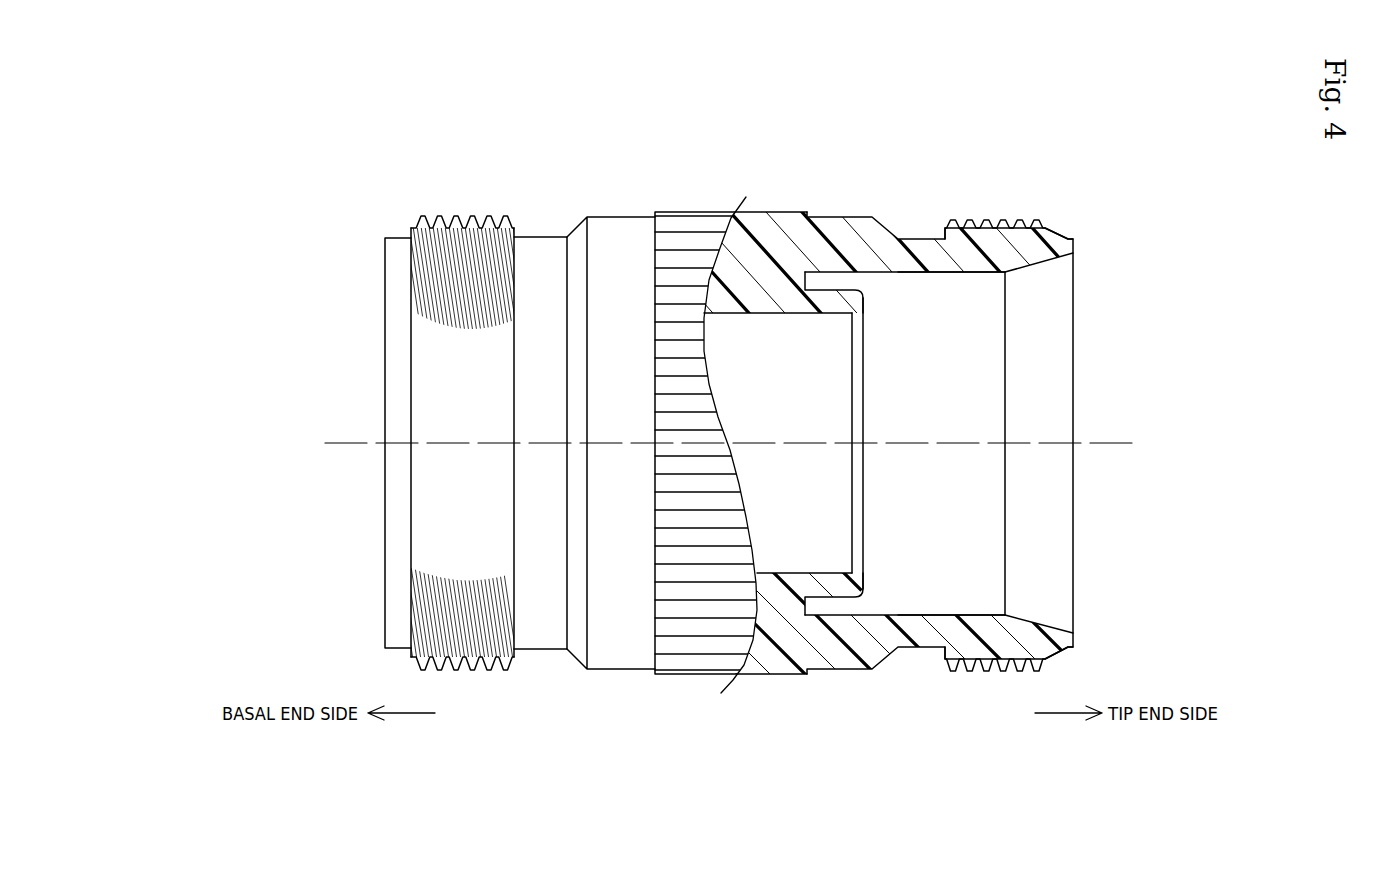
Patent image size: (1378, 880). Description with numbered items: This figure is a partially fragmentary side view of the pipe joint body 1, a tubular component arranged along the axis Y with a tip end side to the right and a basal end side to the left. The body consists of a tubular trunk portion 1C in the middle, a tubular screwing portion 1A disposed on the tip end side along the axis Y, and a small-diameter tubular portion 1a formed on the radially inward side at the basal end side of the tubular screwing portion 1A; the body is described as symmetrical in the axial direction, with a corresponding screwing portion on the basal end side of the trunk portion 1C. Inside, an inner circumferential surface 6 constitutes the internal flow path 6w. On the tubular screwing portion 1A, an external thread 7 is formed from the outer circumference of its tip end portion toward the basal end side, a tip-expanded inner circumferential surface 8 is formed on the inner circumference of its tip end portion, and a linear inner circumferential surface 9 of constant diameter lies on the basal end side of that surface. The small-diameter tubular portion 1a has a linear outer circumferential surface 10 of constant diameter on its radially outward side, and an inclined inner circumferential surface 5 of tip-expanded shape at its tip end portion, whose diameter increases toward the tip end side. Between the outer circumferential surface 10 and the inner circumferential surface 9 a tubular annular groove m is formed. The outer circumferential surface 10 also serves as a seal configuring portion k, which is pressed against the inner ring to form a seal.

The pipe joint body 1 is at (960, 166).
The tubular screwing portion 1A is at (428, 495).
The tubular trunk portion 1C is at (750, 218).
The small-diameter tubular portion 1a is at (855, 300).
The inclined inner circumferential surface 5 is at (860, 590).
The inner circumferential surface 6 is at (795, 573).
The internal flow path 6w is at (778, 443).
The external thread 7 is at (487, 218).
The tip-expanded inner circumferential surface 8 is at (1042, 627).
The linear inner circumferential surface 9 is at (913, 272).
The linear outer circumferential surface 10 is at (847, 270).
The seal configuring portion k is at (862, 298).
The tubular annular groove m is at (808, 607).
The axis Y is at (1113, 443).